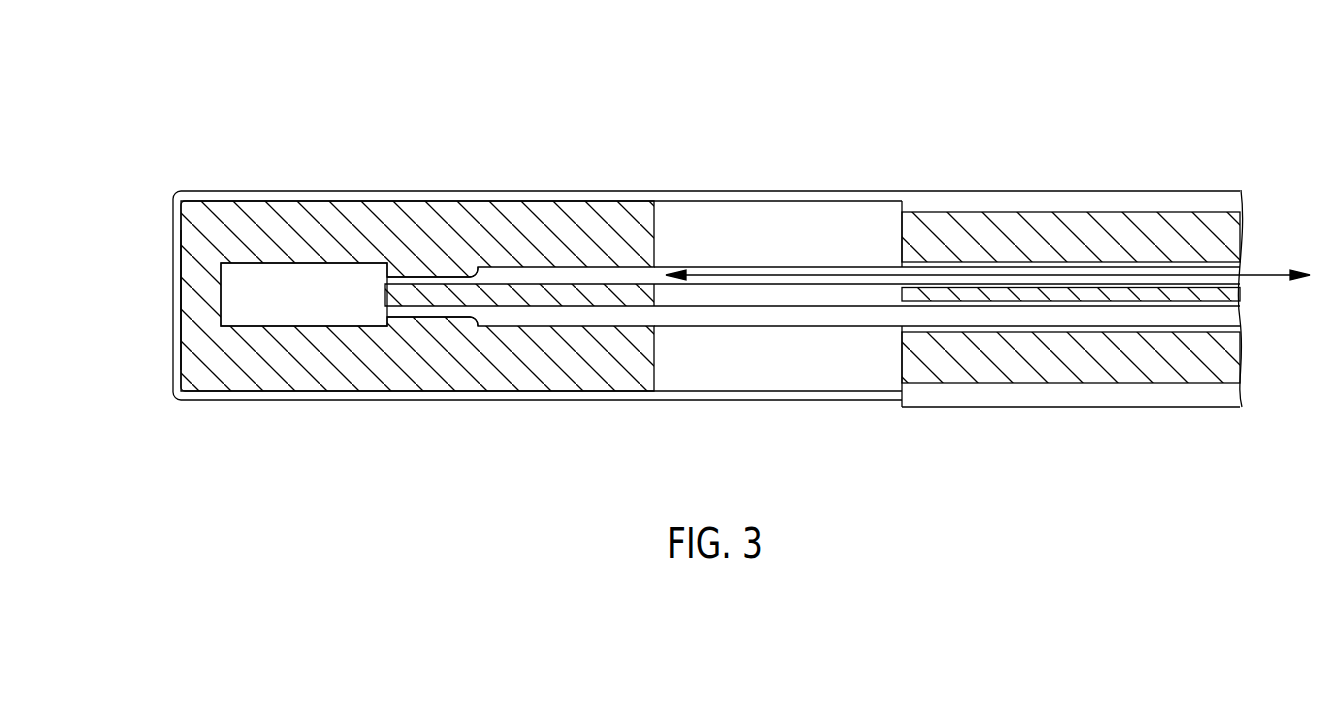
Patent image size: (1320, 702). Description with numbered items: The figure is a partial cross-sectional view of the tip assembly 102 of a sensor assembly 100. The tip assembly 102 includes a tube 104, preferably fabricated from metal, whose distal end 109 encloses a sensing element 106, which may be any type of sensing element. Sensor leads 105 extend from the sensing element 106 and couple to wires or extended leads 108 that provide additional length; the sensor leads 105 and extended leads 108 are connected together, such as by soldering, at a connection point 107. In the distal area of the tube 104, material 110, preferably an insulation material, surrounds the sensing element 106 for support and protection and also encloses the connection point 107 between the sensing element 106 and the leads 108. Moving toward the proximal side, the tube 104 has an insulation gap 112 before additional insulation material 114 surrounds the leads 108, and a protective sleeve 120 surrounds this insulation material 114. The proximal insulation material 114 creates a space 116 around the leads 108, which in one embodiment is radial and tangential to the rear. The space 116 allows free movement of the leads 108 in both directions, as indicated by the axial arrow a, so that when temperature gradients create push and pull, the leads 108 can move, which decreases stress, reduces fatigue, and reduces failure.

The sensor assembly 100 is at (1080, 117).
The tip assembly 102 is at (224, 178).
The tube 104 is at (364, 192).
The sensor leads 105 is at (424, 277).
The sensing element 106 is at (308, 313).
The connection point 107 is at (470, 267).
The extended leads 108 is at (567, 277).
The distal end 109 is at (177, 301).
The material 110 is at (600, 377).
The insulation gap 112 is at (823, 352).
The insulation material 114 is at (1193, 365).
The space 116 is at (918, 262).
The protective sleeve 120 is at (1140, 198).
The axial arrow a is at (1262, 272).